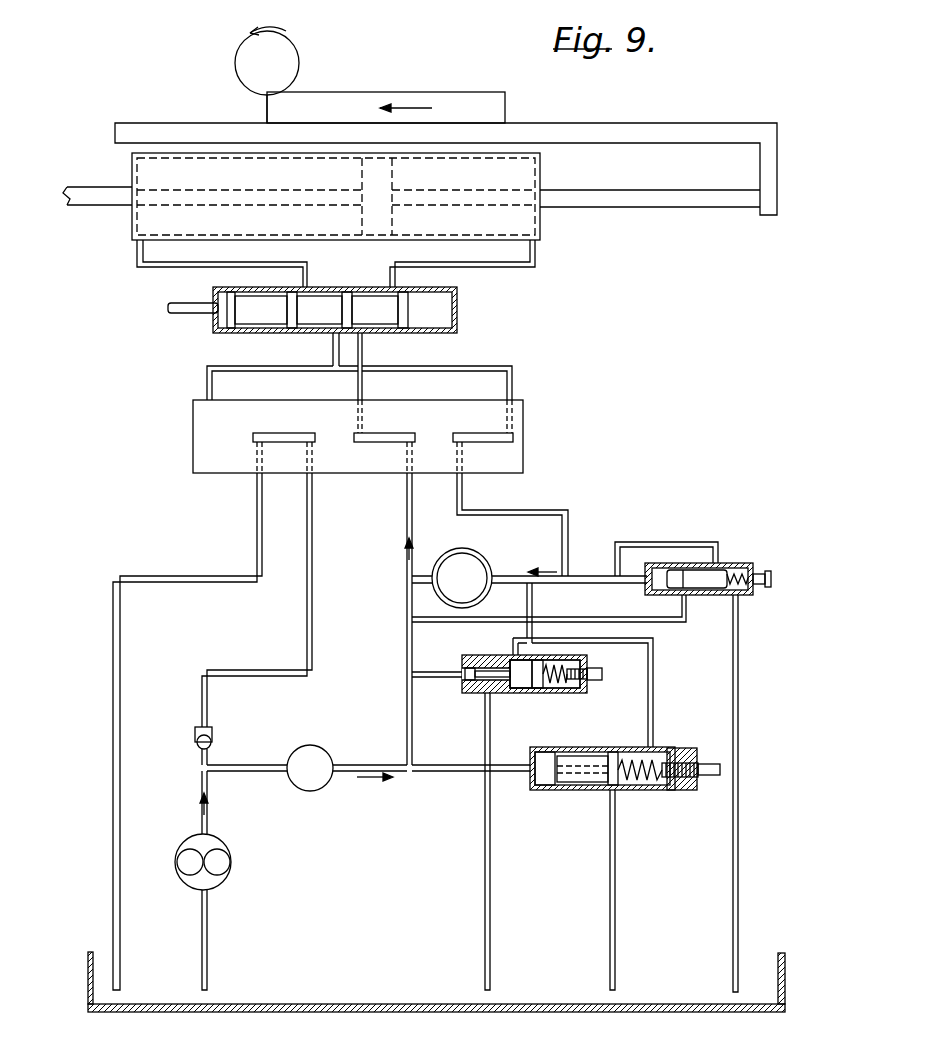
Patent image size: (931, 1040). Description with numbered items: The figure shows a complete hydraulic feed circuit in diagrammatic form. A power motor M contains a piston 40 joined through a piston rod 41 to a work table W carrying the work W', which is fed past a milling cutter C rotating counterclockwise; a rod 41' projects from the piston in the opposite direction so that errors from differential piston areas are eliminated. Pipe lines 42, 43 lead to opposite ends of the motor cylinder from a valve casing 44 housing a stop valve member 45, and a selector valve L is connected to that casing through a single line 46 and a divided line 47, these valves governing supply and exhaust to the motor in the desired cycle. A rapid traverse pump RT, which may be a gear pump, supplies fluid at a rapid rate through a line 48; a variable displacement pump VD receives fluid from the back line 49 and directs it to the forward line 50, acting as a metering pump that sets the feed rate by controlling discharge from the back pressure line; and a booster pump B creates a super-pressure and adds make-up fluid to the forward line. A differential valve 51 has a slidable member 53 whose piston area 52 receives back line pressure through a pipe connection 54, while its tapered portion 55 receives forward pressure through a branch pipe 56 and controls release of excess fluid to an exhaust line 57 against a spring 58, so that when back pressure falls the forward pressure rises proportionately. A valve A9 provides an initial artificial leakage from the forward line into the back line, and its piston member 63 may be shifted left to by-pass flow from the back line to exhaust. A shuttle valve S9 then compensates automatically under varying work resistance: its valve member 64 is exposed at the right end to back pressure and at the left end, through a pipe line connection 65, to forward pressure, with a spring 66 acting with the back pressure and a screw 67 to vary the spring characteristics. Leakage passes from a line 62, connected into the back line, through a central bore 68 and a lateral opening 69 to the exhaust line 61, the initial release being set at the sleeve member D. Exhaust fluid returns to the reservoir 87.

The milling cutter C is at (297, 64).
The work table W is at (446, 151).
The work W' is at (404, 105).
The power motor M is at (125, 215).
The piston 40 is at (362, 178).
The piston rod 41 is at (650, 185).
The rod 41' is at (97, 185).
The pipe line 42 is at (137, 265).
The pipe line 43 is at (535, 266).
The valve casing 44 is at (457, 318).
The stop valve member 45 is at (316, 310).
The single line 46 is at (363, 352).
The divided line 47 is at (333, 352).
The selector valve L is at (523, 422).
The line 48 is at (273, 665).
The back line 49 is at (572, 510).
The forward line 50 is at (414, 527).
The variable displacement pump VD is at (529, 578).
The valve A9 is at (738, 560).
The piston member 63 is at (706, 589).
The pipe connection 54 is at (513, 653).
The differential valve 51 is at (527, 695).
The piston area 52 is at (536, 690).
The slidable member 53 is at (521, 690).
The tapered portion 55 is at (474, 691).
The branch pipe 56 is at (437, 679).
The exhaust line 57 is at (485, 735).
The spring 58 is at (570, 688).
The line 62 is at (655, 712).
The shuttle valve S9 is at (602, 756).
The valve member 64 is at (580, 777).
The pipe line connection 65 is at (511, 775).
The spring 66 is at (637, 783).
The screw 67 is at (702, 757).
The central bore 68 is at (598, 786).
The lateral opening 69 is at (558, 787).
The sleeve member D is at (684, 790).
The exhaust line 61 is at (615, 850).
The booster pump B is at (307, 768).
The rapid traverse pump RT is at (232, 862).
The reservoir 87 is at (88, 972).